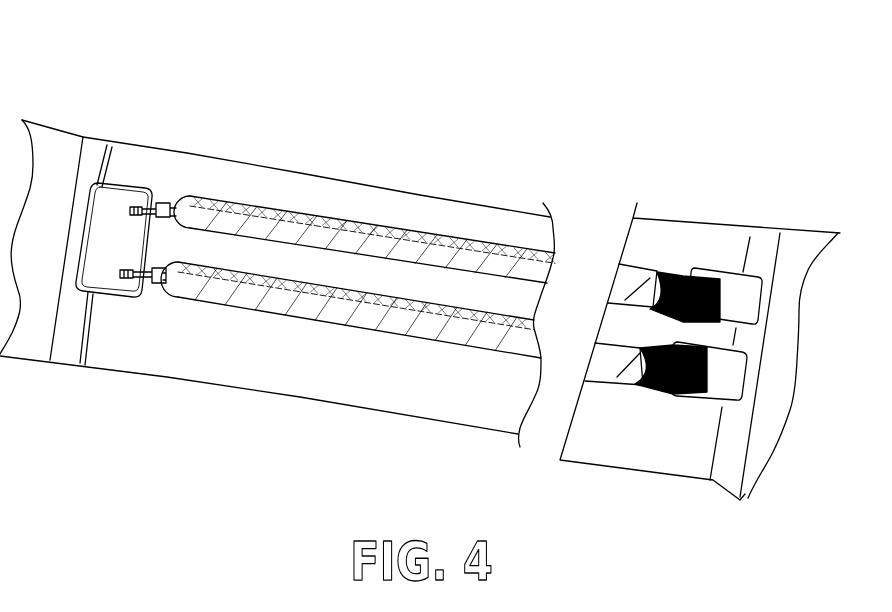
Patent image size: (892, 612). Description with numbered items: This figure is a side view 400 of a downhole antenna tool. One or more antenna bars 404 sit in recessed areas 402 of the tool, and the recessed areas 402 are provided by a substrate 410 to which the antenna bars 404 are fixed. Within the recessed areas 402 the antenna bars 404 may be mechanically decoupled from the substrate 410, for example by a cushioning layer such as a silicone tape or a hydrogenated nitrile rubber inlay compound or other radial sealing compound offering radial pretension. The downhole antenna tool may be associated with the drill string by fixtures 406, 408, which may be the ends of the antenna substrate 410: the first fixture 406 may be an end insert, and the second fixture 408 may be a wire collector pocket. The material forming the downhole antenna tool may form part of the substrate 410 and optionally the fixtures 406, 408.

The side view 400 is at (794, 110).
The recessed areas 402 is at (714, 278).
The antenna bars 404 is at (343, 227).
The first fixture 406 is at (782, 237).
The second fixture 408 is at (47, 372).
The substrate 410 is at (403, 208).